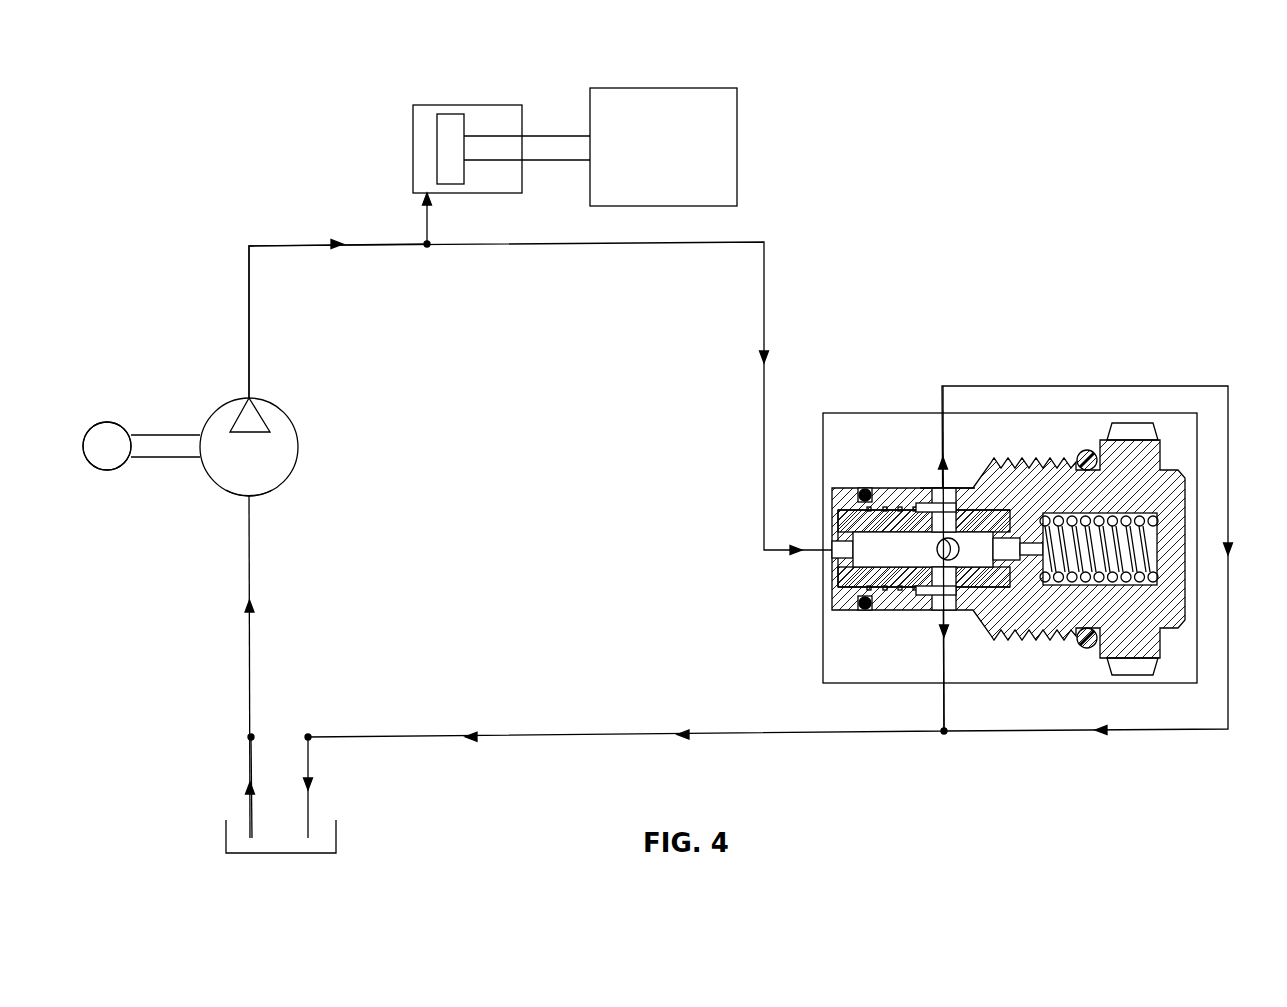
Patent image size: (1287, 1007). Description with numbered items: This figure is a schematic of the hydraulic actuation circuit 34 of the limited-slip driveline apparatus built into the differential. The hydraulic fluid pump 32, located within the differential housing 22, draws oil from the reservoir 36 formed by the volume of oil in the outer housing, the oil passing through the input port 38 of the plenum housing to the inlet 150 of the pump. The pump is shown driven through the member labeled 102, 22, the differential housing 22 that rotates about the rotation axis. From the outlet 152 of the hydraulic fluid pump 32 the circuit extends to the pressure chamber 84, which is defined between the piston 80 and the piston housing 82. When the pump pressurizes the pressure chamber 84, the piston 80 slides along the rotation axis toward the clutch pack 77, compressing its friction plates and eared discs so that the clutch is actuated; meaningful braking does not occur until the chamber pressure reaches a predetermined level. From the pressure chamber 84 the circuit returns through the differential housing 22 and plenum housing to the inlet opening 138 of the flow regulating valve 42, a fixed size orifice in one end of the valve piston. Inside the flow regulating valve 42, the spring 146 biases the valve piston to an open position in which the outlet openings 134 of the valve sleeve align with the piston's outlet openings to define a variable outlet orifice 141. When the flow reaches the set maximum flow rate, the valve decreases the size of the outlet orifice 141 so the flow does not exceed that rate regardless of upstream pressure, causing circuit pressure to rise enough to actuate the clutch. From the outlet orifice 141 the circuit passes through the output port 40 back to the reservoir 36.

The hydraulic actuation circuit 34 is at (293, 232).
The piston housing 82 is at (487, 105).
The pressure chamber 84 is at (420, 150).
The piston 80 is at (537, 160).
The clutch pack 77 is at (660, 88).
The hydraulic fluid pump 32 is at (300, 447).
The outlet 152 is at (255, 398).
The inlet 150 is at (258, 492).
The motor 102 is at (107, 470).
The differential housing 22 is at (107, 446).
The input port 38 is at (249, 737).
The output port 40 is at (308, 736).
The reservoir 36 is at (336, 835).
The flow regulating valve 42 is at (1012, 523).
The outlet openings 134 is at (949, 486).
The outlet orifice 141 is at (932, 473).
The spring 146 is at (1155, 518).
The inlet opening 138 is at (838, 553).